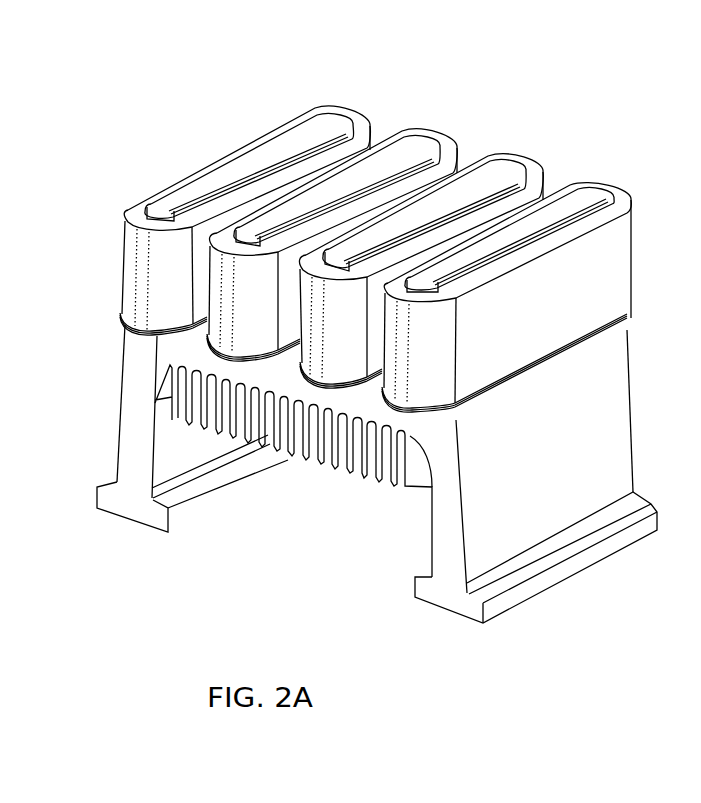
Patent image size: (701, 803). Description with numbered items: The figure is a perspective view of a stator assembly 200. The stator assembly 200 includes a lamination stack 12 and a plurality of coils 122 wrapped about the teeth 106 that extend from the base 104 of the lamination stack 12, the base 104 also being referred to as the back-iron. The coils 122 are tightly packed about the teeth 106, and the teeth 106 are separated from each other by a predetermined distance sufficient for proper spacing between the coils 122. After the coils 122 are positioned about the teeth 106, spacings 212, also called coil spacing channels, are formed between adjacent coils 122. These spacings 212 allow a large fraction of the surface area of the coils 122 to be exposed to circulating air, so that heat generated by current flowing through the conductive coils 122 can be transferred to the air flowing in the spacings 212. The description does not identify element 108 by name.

The stator assembly 200 is at (521, 83).
The teeth 106 is at (578, 198).
The spacings 212 is at (375, 122).
The coils 122 is at (592, 250).
The grooves / comb 108 is at (303, 447).
The base 104 is at (452, 423).
The lamination stack 12 is at (567, 591).